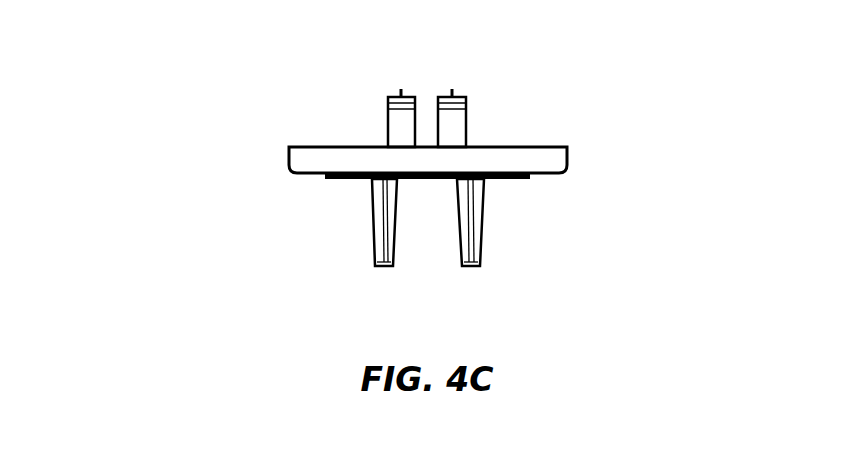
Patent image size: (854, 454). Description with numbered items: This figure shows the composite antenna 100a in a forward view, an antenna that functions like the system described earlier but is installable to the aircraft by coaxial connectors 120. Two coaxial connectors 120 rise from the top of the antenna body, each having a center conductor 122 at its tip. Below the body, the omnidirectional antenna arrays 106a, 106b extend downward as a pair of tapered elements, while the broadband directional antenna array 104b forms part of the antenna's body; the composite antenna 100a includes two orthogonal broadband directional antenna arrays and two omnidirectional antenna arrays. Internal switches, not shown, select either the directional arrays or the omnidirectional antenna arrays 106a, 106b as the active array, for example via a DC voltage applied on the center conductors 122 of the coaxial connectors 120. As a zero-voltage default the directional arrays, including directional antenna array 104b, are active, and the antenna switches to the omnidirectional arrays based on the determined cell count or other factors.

The composite antenna 100a is at (111, 73).
The broadband directional antenna array 104b is at (510, 180).
The omnidirectional antenna array 106a is at (370, 222).
The omnidirectional antenna array 106b is at (485, 220).
The coaxial connector 120 is at (467, 122).
The center conductor 122 is at (400, 93).